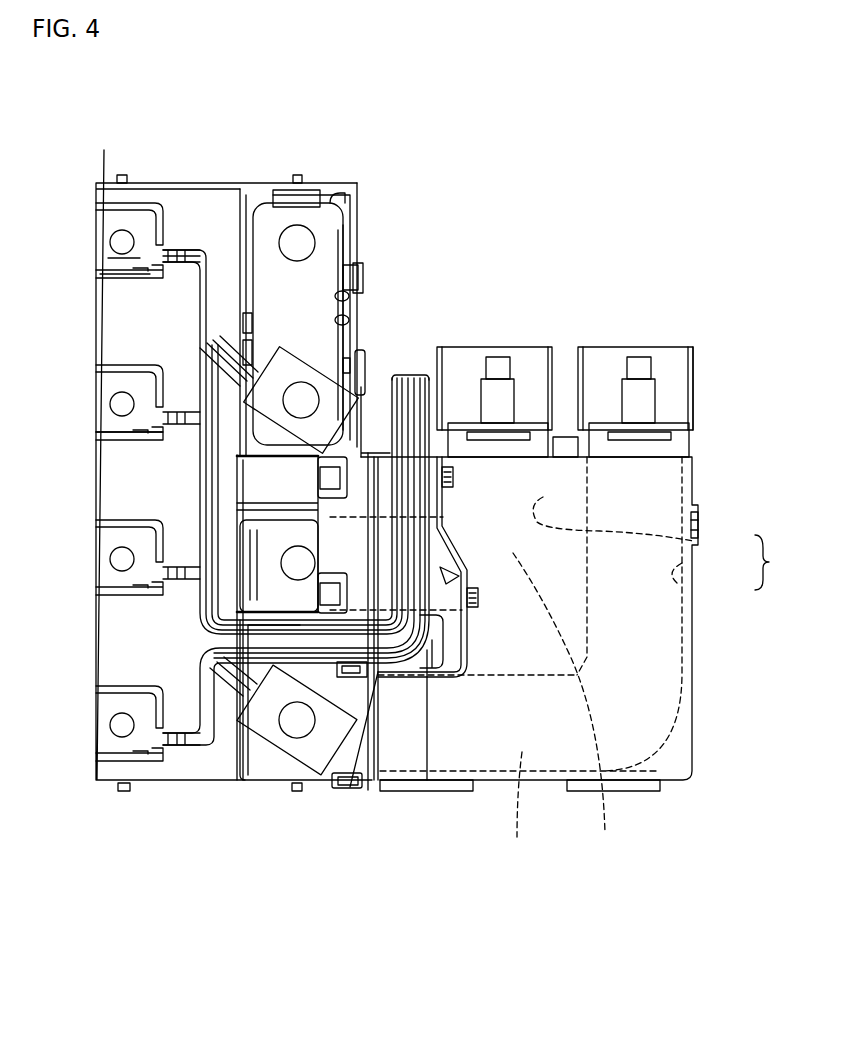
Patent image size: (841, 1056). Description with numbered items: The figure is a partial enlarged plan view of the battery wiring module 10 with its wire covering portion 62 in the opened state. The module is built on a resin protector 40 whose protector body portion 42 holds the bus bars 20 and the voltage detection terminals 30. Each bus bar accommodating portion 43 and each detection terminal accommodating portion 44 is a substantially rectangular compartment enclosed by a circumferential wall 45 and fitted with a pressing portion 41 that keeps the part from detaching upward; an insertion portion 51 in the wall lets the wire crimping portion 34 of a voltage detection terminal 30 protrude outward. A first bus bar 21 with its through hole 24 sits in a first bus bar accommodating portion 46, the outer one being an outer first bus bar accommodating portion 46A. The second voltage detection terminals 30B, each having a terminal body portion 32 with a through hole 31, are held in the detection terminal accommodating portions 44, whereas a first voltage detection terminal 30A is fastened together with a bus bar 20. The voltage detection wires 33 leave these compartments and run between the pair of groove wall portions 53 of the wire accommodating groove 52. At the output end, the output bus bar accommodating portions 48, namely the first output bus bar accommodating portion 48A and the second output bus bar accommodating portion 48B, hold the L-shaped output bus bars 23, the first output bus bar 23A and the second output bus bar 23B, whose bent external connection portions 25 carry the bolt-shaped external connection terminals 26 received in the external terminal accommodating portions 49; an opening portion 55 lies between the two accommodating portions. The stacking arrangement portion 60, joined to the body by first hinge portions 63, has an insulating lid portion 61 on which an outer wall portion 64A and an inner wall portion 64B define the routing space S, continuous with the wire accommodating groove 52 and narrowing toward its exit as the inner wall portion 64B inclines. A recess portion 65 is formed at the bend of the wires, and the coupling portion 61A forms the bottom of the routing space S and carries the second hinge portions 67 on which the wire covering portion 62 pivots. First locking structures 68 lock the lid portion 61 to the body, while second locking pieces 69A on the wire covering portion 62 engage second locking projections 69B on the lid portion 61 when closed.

The battery wiring module 10 is at (450, 112).
The bus bar 20 is at (333, 233).
The first bus bar 21 is at (333, 275).
The output bus bar 23 is at (370, 787).
The first output bus bar 23A is at (520, 808).
The second output bus bar 23B is at (568, 707).
The through hole 24 is at (298, 568).
The external connection portion 25 is at (673, 427).
The external connection terminal 26 is at (633, 360).
The voltage detection terminal 30 is at (100, 237).
The first voltage detection terminal 30A is at (262, 762).
The second voltage detection terminal 30B is at (100, 390).
The through hole 31 is at (102, 563).
The terminal body portion 32 is at (100, 747).
The voltage detection wire 33 is at (165, 633).
The wire crimping portion 34 is at (172, 757).
The resin protector 40 is at (172, 197).
The pressing portion 41 is at (345, 278).
The protector body portion 42 is at (218, 197).
The bus bar accommodating portion 43 is at (350, 190).
The detection terminal accommodating portion 44 is at (117, 264).
The circumferential wall 45 is at (118, 276).
The first bus bar accommodating portion 46 is at (346, 297).
The outer first bus bar accommodating portion 46A is at (346, 320).
The output bus bar accommodating portion 48 is at (774, 562).
The first output bus bar accommodating portion 48A is at (680, 580).
The second output bus bar accommodating portion 48B is at (693, 541).
The external terminal accommodating portion 49 is at (685, 355).
The insertion portion 51 is at (153, 250).
The wire accommodating groove 52 is at (125, 628).
The groove wall portion 53 is at (200, 648).
The opening portion 55 is at (427, 780).
The stacking arrangement portion 60 is at (657, 658).
The lid portion 61 is at (655, 695).
The coupling portion 61A is at (383, 543).
The wire covering portion 62 is at (323, 445).
The first hinge portion 63 is at (455, 791).
The outer wall portion 64A is at (337, 527).
The inner wall portion 64B is at (457, 552).
The recess portion 65 is at (347, 788).
The second hinge portion 67 is at (372, 480).
The first locking structure 68 is at (700, 522).
The second locking piece 69A is at (337, 478).
The second locking projection 69B is at (455, 468).
The routing space S is at (467, 573).